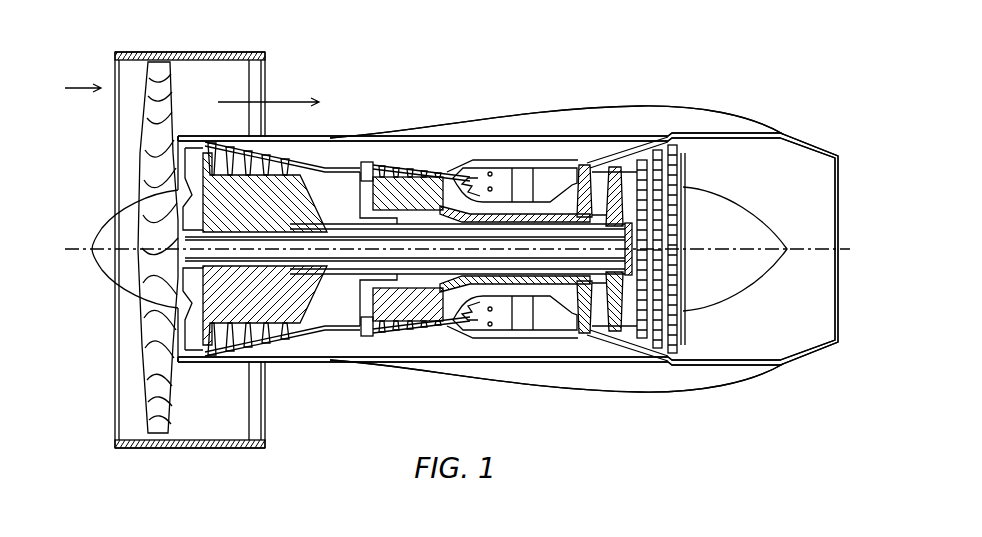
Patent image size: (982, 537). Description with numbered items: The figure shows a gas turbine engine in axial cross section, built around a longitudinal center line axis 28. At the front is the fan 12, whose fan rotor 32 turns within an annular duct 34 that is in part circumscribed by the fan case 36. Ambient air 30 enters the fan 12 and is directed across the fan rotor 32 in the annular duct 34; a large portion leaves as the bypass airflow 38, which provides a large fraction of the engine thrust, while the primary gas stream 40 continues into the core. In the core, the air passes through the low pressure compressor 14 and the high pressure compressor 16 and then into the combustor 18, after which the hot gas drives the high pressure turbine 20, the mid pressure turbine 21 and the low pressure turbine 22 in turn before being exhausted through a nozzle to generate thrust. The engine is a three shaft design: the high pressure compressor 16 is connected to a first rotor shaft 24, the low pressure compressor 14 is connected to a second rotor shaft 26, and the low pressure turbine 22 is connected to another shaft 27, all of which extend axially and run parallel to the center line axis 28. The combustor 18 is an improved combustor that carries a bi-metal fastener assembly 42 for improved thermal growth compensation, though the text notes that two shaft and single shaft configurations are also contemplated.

The fan 12 is at (126, 142).
The low pressure compressor 14 is at (287, 193).
The high pressure compressor 16 is at (413, 323).
The combustor 18 is at (500, 327).
The high pressure turbine 20 is at (583, 166).
The mid pressure turbine 21 is at (619, 165).
The low pressure turbine 22 is at (688, 157).
The first rotor shaft 24 is at (523, 285).
The second rotor shaft 26 is at (600, 318).
The shaft 27 is at (605, 315).
The longitudinal center line axis 28 is at (853, 249).
The ambient air 30 is at (80, 86).
The fan rotor 32 is at (160, 425).
The annular duct 34 is at (250, 410).
The fan case 36 is at (205, 449).
The bypass airflow 38 is at (304, 97).
The primary gas stream 40 is at (369, 161).
The bi-metal fastener assembly 42 is at (500, 176).